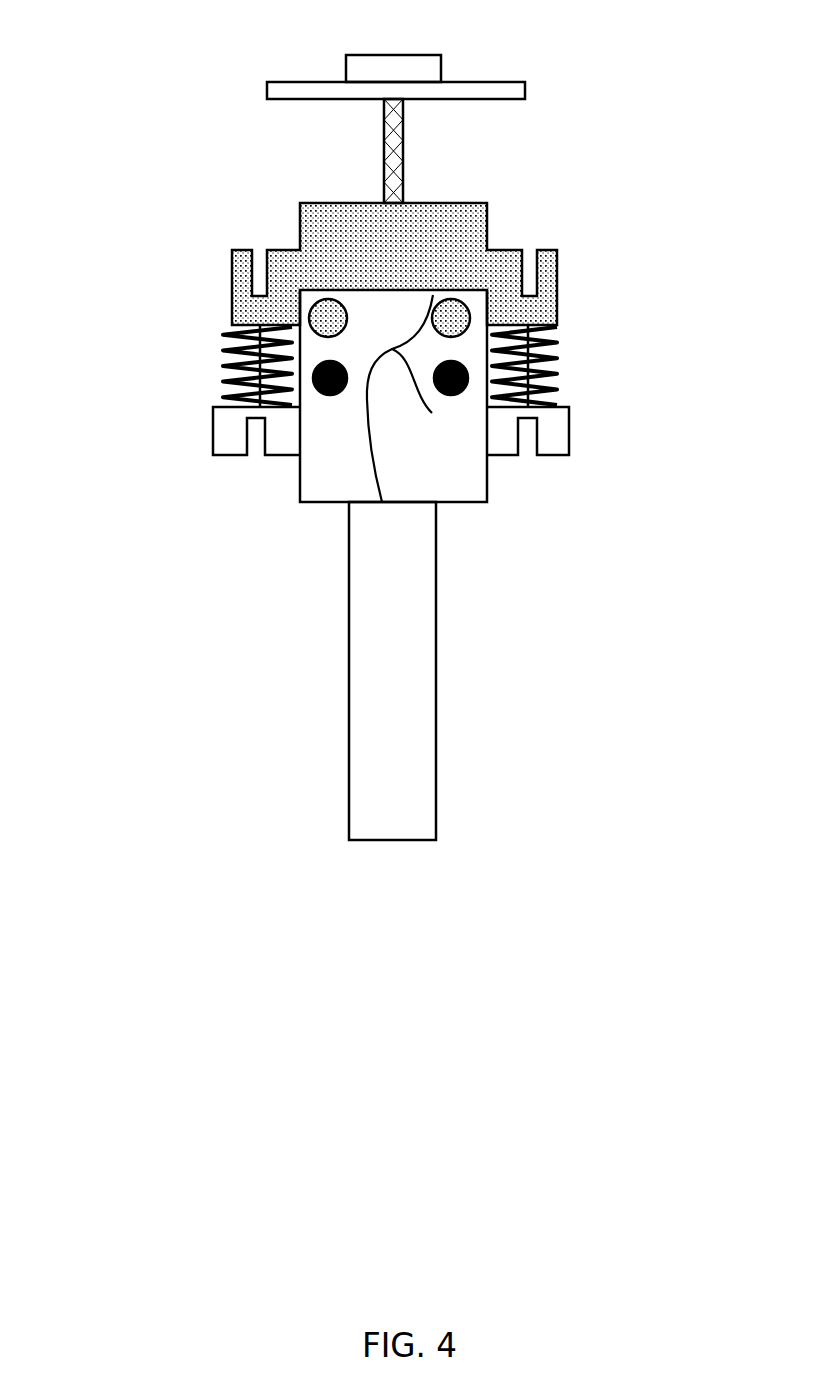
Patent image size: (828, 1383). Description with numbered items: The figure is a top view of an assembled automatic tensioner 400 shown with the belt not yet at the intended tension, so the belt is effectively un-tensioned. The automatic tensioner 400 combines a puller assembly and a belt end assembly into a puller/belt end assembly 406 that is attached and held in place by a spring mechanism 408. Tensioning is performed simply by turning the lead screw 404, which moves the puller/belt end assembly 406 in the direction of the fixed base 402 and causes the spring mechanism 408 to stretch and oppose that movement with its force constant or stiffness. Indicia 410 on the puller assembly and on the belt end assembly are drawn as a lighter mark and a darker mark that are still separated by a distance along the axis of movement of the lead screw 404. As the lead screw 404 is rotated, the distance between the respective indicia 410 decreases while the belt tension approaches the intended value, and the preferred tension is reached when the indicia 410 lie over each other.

The automatic tensioner 400 is at (477, 998).
The fixed base 402 is at (488, 80).
The lead screw 404 is at (415, 153).
The puller/belt end assembly 406 is at (571, 418).
The spring mechanism 408 is at (218, 365).
The indicia 410 is at (382, 502).